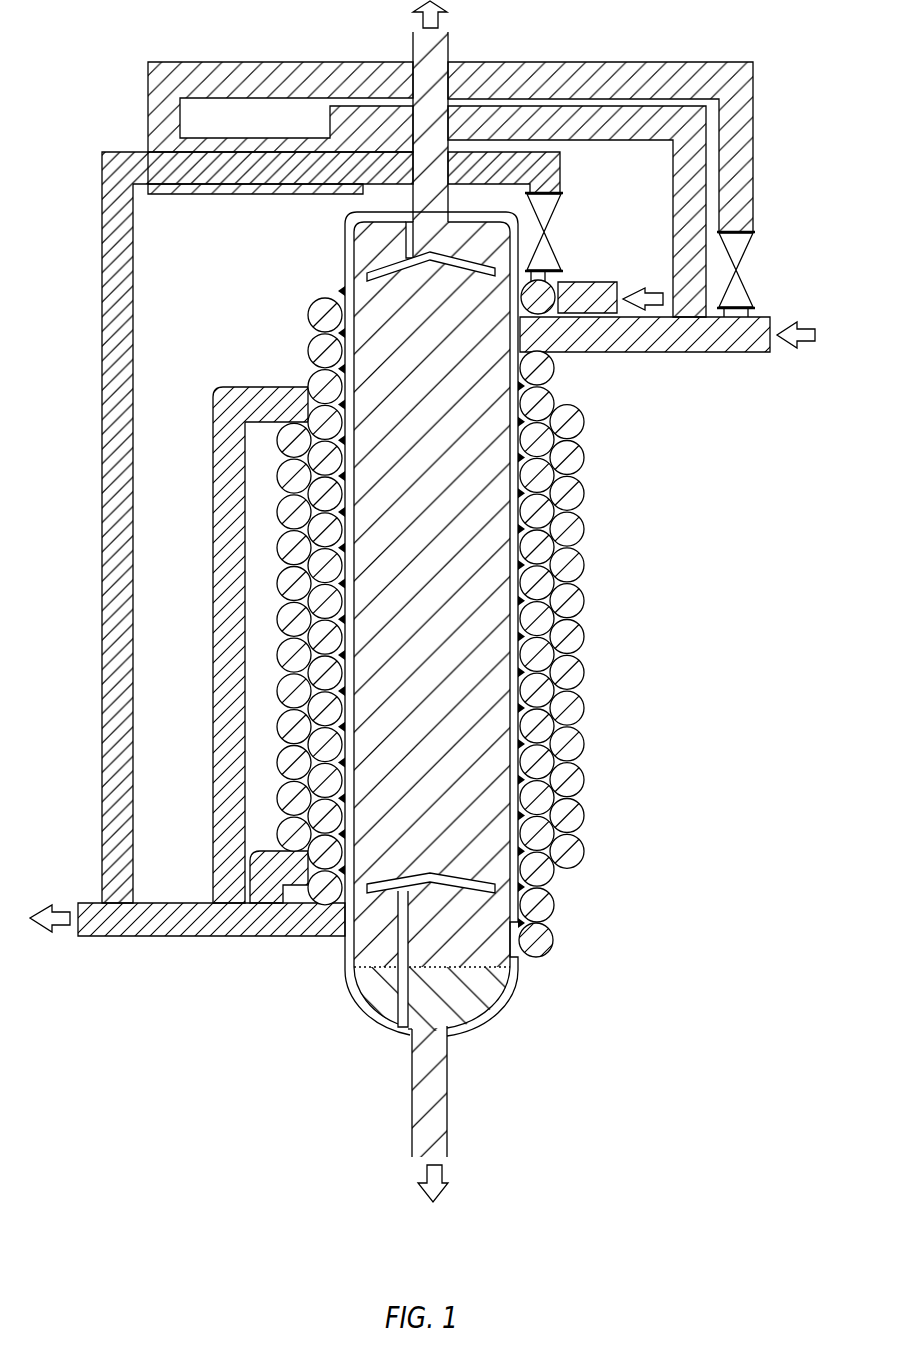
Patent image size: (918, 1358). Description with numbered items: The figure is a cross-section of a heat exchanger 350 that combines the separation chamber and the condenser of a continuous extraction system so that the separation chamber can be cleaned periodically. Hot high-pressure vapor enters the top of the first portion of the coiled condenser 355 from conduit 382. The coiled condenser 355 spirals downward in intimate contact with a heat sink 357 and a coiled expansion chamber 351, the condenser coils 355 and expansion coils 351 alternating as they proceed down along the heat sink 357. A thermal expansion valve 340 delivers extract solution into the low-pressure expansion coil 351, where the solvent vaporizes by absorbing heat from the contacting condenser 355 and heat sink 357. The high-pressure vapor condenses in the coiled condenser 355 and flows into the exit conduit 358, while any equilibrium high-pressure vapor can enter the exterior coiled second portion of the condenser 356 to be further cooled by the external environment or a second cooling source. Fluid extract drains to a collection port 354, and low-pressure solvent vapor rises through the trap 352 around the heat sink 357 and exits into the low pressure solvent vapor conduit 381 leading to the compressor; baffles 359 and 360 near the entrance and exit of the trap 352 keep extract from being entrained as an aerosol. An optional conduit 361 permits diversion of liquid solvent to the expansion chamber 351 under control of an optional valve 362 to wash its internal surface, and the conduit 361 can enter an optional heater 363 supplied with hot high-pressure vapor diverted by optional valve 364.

The heat exchanger 350 is at (342, 53).
The thermal expansion valve 340 is at (560, 290).
The coiled expansion chamber 351 is at (318, 304).
The trap 352 is at (458, 240).
The collection port 354 is at (465, 1003).
The coiled condenser 355 is at (318, 342).
The exterior coiled second portion of the condenser 356 is at (262, 387).
The heat sink 357 is at (340, 289).
The exit conduit 358 is at (232, 924).
The baffle 359 is at (397, 968).
The baffle 360 is at (368, 272).
The conduit 361 is at (130, 776).
The valve 362 is at (545, 252).
The heater 363 is at (282, 190).
The valve 364 is at (737, 288).
The low pressure solvent vapor conduit 381 is at (438, 50).
The conduit 382 is at (718, 342).